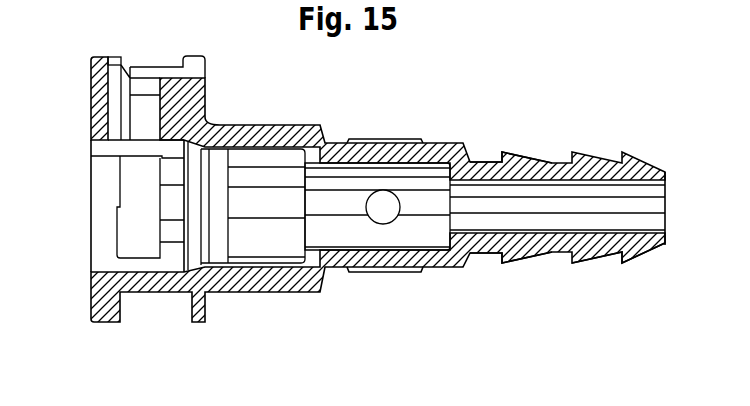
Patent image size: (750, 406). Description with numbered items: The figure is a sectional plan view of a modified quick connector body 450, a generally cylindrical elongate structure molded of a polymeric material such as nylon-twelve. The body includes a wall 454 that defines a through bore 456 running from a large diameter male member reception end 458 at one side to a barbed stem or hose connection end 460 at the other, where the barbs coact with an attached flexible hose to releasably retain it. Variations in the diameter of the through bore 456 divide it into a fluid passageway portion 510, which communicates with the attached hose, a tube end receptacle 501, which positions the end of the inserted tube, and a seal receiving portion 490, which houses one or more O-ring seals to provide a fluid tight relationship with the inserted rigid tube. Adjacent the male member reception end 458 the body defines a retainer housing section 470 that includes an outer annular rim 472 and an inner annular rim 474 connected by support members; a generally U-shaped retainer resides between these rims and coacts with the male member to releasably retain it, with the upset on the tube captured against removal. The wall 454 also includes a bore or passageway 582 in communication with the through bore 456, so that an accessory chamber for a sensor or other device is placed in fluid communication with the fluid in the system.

The male member reception end 458 is at (84, 157).
The outer annular rim 472 is at (95, 57).
The inner annular rim 474 is at (203, 58).
The retainer housing section 470 is at (137, 178).
The seal receiving portion 490 is at (277, 163).
The tube end receptacle 501 is at (338, 175).
The passageway 582 is at (400, 207).
The wall 454 is at (481, 160).
The fluid passageway portion 510 is at (605, 195).
The through bore 456 is at (650, 207).
The connector body 450 is at (506, 273).
The hose connection end 460 is at (623, 258).